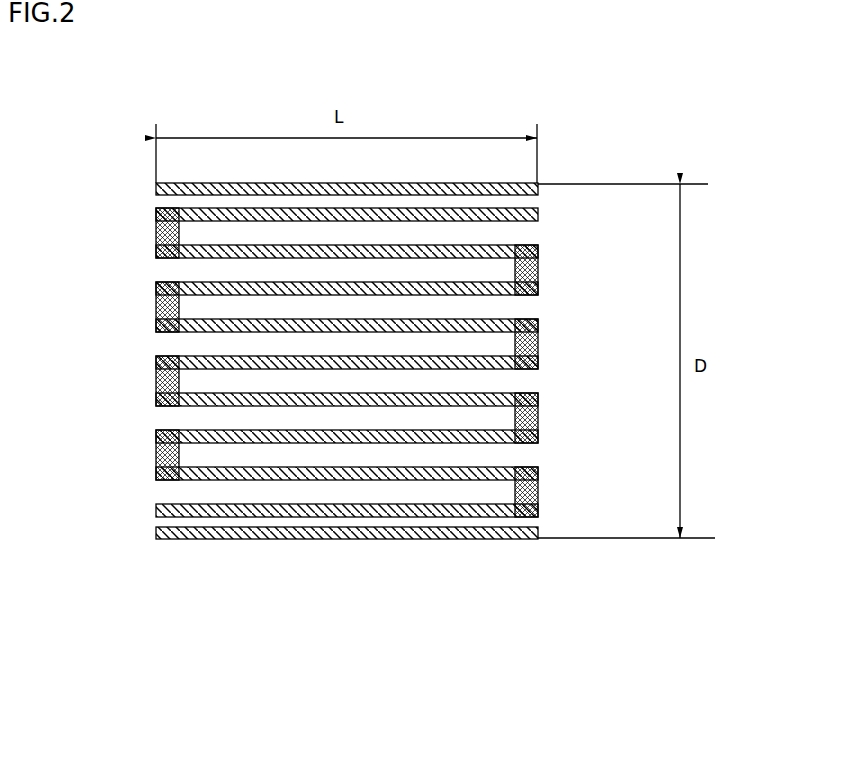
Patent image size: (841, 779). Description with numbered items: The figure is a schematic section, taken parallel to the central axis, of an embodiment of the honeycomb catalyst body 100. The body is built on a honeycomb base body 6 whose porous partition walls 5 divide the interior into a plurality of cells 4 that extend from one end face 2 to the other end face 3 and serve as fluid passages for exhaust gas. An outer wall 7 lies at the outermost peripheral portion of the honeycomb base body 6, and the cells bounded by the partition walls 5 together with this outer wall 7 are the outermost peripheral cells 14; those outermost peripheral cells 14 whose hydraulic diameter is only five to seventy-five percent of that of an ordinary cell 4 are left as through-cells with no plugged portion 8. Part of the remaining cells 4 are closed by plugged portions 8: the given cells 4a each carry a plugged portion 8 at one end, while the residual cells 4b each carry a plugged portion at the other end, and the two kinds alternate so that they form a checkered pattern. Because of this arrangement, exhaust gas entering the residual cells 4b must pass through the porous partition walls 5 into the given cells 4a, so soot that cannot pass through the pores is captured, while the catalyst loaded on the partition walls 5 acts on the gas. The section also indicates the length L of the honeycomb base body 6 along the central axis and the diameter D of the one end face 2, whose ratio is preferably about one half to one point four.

The honeycomb catalyst body 100 is at (639, 31).
The cell 4 is at (302, 403).
The outermost peripheral cell 14 is at (158, 197).
The given cell 4a is at (420, 452).
The residual cell 4b is at (377, 490).
The plugged portion 8 is at (352, 362).
The one end face 2 is at (157, 328).
The other end face 3 is at (539, 292).
The partition wall 5 is at (258, 480).
The outer wall 7 is at (289, 540).
The honeycomb base body 6 is at (190, 540).